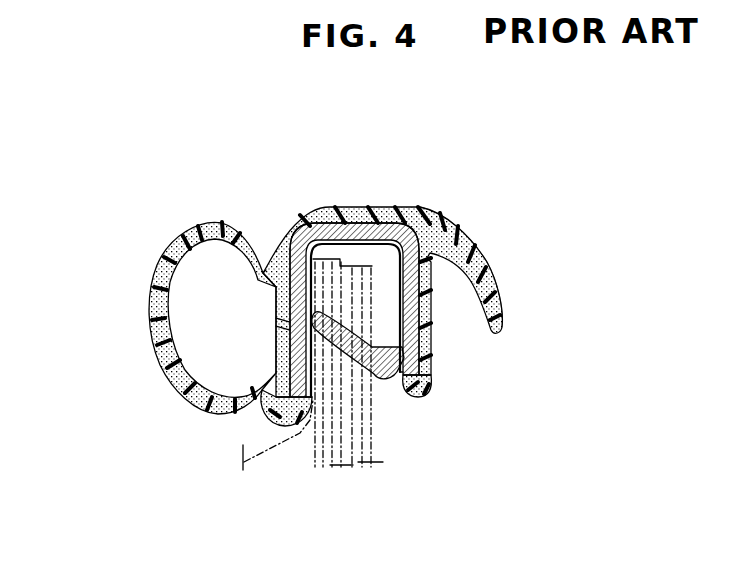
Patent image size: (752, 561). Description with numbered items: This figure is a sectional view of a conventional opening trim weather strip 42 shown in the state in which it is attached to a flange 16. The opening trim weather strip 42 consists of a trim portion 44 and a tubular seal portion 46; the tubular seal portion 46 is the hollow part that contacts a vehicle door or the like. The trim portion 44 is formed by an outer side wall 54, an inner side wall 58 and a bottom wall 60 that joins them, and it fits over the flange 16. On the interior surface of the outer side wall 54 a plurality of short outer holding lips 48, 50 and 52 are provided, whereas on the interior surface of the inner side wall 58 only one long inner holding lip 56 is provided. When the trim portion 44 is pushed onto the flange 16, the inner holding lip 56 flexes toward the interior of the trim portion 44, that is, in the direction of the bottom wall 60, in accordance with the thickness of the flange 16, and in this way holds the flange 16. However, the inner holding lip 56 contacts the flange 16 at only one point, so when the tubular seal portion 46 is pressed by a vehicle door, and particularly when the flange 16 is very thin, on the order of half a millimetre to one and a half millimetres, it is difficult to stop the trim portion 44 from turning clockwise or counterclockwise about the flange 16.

The flange 16 is at (370, 427).
The opening trim weather strip 42 is at (472, 232).
The trim portion 44 is at (383, 207).
The tubular seal portion 46 is at (276, 290).
The outer holding lip 48 is at (277, 377).
The outer holding lip 50 is at (277, 350).
The outer holding lip 52 is at (276, 284).
The outer side wall 54 is at (277, 322).
The inner holding lip 56 is at (380, 378).
The inner side wall 58 is at (432, 322).
The bottom wall 60 is at (337, 207).